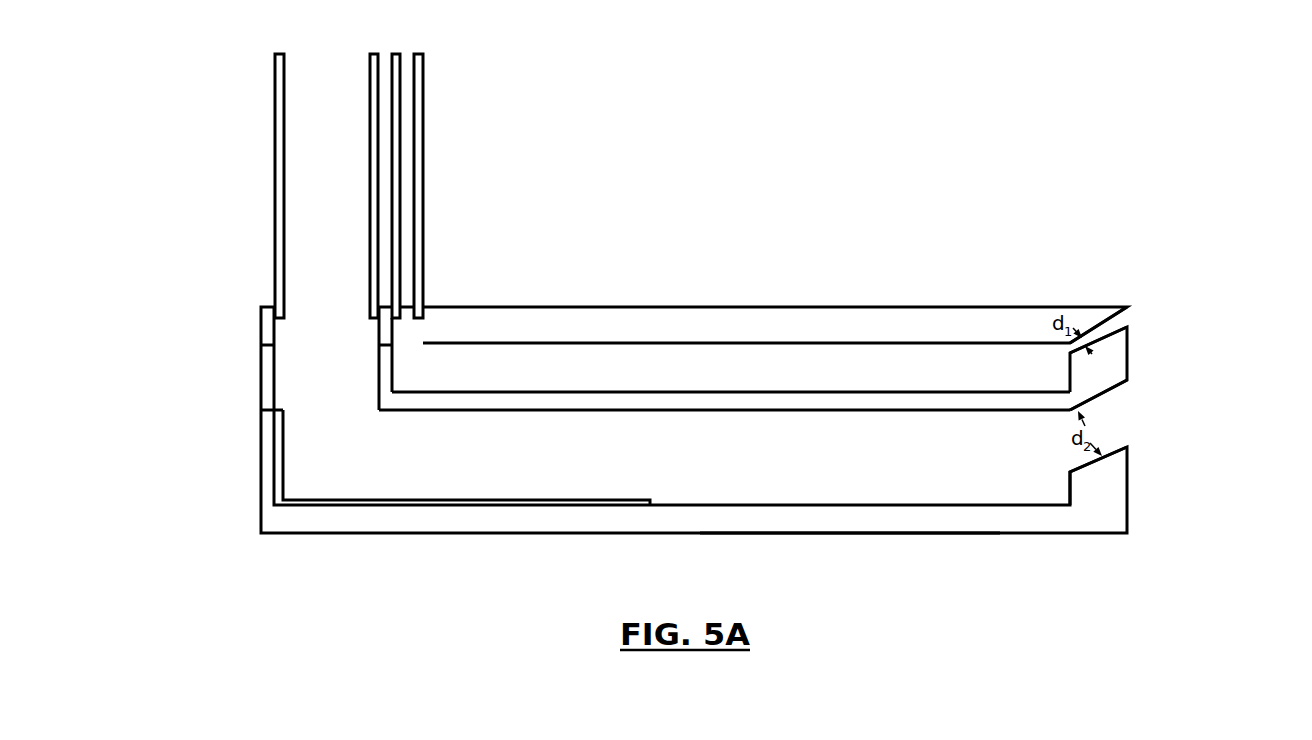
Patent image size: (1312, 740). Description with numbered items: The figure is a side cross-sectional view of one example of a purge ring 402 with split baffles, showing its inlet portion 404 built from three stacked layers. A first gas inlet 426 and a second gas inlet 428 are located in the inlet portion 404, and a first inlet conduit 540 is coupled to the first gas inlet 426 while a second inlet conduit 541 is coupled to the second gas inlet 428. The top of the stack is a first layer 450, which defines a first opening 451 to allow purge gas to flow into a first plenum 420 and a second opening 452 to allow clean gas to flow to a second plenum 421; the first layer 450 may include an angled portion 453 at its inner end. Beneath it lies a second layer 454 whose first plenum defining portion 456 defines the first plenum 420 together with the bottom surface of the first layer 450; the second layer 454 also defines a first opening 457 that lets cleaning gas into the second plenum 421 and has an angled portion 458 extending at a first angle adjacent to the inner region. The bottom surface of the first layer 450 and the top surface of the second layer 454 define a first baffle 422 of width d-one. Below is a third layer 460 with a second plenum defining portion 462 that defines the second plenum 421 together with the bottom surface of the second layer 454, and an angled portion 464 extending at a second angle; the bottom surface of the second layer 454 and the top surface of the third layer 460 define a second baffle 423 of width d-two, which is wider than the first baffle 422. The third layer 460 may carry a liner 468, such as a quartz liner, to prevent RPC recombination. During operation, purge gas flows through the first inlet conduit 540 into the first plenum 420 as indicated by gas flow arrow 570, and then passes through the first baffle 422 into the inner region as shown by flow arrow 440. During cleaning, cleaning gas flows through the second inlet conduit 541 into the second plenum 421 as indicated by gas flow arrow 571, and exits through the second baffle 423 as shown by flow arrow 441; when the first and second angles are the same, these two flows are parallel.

The purge ring 402 is at (945, 178).
The inlet portion 404 is at (738, 234).
The first plenum 420 is at (956, 383).
The second plenum 421 is at (946, 460).
The first baffle 422 is at (1093, 325).
The second baffle 423 is at (1093, 401).
The first gas inlet 426 is at (330, 278).
The second gas inlet 428 is at (407, 292).
The flow arrow 440 is at (1127, 322).
The flow arrow 441 is at (1108, 431).
The first layer 450 is at (827, 321).
The first opening 451 is at (393, 333).
The second opening 452 is at (275, 325).
The angled portion 453 is at (1100, 318).
The second layer 454 is at (677, 392).
The first plenum defining portion 456 is at (793, 402).
The first opening 457 is at (275, 382).
The angled portion 458 is at (1107, 373).
The third layer 460 is at (637, 420).
The second plenum defining portion 462 is at (798, 523).
The angled portion 464 is at (1090, 492).
The liner 468 is at (362, 499).
The first inlet conduit 540 is at (274, 125).
The second inlet conduit 541 is at (424, 186).
The gas flow arrow 570 is at (542, 373).
The gas flow arrow 571 is at (578, 472).